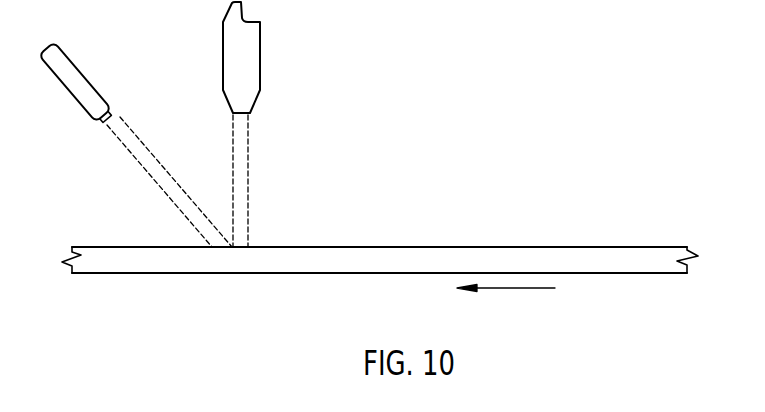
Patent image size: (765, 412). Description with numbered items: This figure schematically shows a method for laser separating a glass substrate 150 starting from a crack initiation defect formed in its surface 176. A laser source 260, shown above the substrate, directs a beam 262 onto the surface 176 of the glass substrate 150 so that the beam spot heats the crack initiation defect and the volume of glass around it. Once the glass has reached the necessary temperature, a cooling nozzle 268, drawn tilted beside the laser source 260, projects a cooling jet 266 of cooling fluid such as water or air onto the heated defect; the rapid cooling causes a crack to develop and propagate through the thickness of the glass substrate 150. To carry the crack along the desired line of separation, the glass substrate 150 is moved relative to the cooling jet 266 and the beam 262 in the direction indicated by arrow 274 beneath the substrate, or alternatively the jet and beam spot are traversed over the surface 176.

The glass substrate 150 is at (618, 255).
The surface of the glass substrate 176 is at (483, 247).
The laser source 260 is at (247, 64).
The beam 262 is at (248, 187).
The cooling jet 266 is at (138, 163).
The cooling nozzle 268 is at (85, 88).
The arrow 274 is at (523, 290).